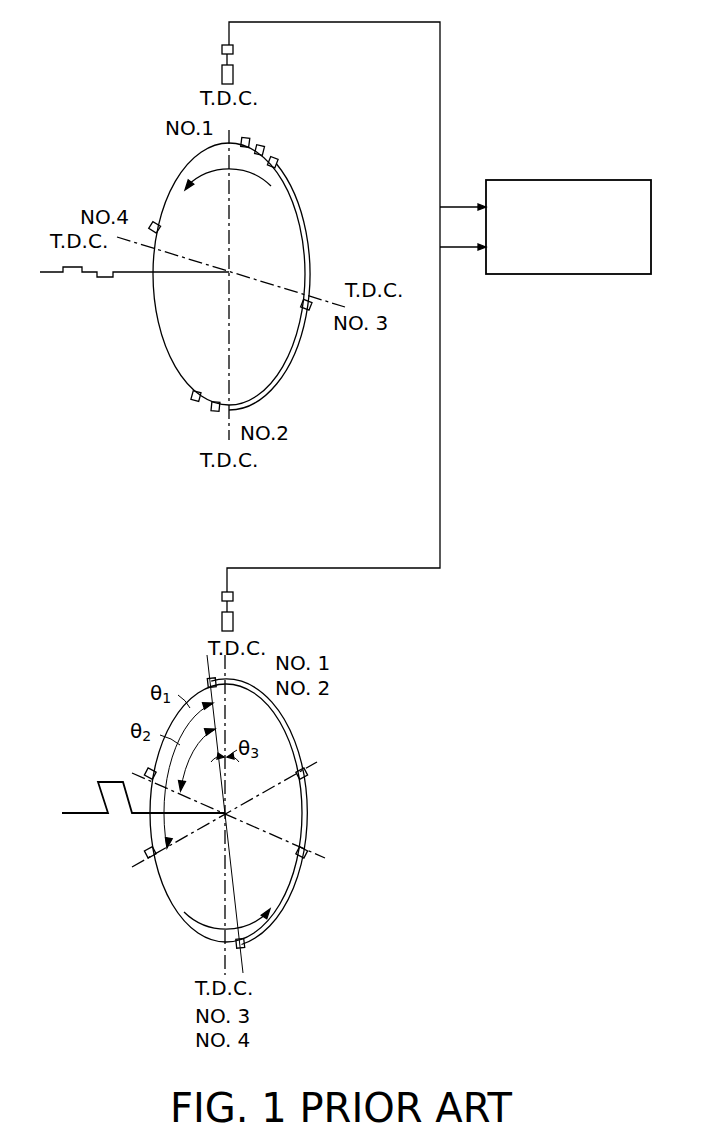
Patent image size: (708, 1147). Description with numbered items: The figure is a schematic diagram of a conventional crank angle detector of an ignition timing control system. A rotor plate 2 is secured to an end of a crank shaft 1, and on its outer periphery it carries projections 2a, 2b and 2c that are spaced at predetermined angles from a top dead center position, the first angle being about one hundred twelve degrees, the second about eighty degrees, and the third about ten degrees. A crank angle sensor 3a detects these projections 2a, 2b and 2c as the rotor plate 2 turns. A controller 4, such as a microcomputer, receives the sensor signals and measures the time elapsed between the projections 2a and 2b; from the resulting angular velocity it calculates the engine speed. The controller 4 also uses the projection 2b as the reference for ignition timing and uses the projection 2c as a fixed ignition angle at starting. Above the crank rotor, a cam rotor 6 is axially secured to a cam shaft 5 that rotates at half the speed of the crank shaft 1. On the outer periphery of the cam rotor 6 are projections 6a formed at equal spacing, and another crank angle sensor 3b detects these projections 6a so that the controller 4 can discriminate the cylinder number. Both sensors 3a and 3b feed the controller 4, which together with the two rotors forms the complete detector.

The crank shaft 1 is at (65, 812).
The rotor plate 2 is at (292, 887).
The projection 2a is at (310, 775).
The projection 2b is at (312, 845).
The projection 2c is at (207, 678).
The crank angle sensor 3a is at (234, 620).
The crank angle sensor 3b is at (234, 72).
The controller 4 is at (565, 275).
The cam shaft 5 is at (131, 278).
The cam rotor 6 is at (283, 370).
The projections 6a is at (272, 162).